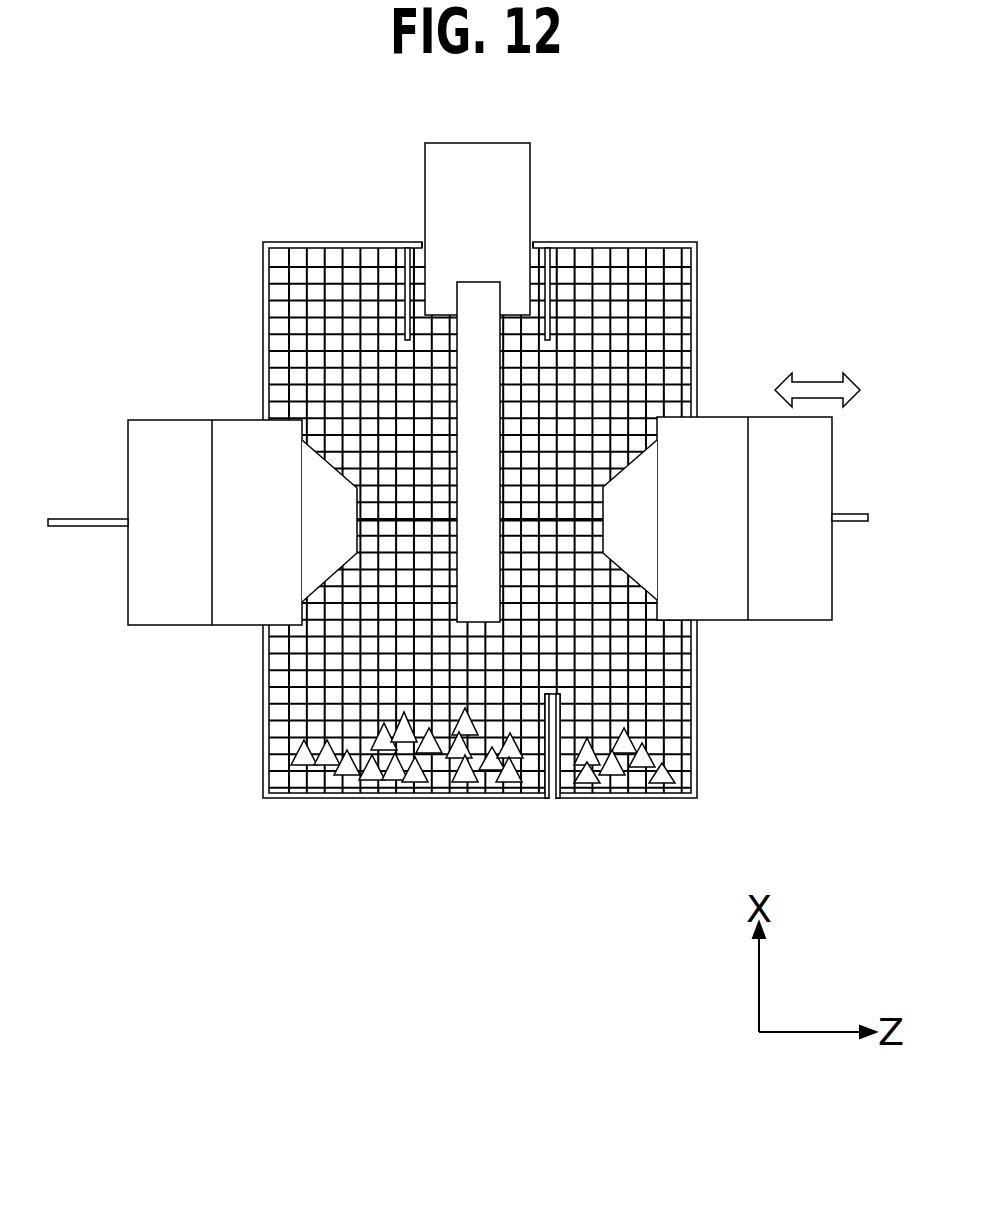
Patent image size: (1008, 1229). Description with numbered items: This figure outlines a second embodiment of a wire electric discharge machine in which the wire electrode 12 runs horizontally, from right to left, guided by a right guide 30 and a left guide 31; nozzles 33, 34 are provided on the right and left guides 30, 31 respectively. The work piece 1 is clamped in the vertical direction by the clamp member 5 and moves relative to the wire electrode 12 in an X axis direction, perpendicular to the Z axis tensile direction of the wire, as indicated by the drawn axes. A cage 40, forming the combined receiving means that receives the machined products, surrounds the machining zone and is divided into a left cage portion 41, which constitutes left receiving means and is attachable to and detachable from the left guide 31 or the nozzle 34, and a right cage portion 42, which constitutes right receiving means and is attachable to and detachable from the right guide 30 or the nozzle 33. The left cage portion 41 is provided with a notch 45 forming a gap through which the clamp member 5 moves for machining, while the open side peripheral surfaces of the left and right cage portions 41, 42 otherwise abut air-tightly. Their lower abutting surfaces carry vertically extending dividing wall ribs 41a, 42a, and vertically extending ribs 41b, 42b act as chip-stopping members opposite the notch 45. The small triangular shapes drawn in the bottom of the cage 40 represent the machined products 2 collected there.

The work piece 1 is at (470, 393).
The particles 2 is at (693, 775).
The clamp member 5 is at (517, 175).
The wire electrode 12 is at (567, 520).
The right guide 30 is at (790, 613).
The left guide 31 is at (157, 618).
The nozzle 33 is at (633, 563).
The nozzle 34 is at (317, 560).
The cage 40 is at (400, 806).
The left cage portion 41 is at (298, 800).
The dividing wall rib 41a is at (535, 800).
The rib 41b is at (407, 293).
The right cage portion 42 is at (690, 798).
The dividing wall rib 42a is at (583, 800).
The rib 42b is at (548, 290).
The notch 45 is at (422, 238).